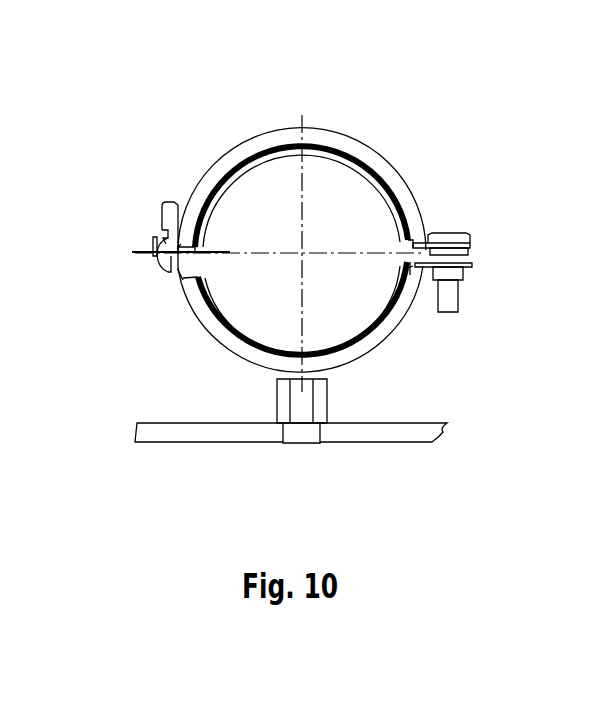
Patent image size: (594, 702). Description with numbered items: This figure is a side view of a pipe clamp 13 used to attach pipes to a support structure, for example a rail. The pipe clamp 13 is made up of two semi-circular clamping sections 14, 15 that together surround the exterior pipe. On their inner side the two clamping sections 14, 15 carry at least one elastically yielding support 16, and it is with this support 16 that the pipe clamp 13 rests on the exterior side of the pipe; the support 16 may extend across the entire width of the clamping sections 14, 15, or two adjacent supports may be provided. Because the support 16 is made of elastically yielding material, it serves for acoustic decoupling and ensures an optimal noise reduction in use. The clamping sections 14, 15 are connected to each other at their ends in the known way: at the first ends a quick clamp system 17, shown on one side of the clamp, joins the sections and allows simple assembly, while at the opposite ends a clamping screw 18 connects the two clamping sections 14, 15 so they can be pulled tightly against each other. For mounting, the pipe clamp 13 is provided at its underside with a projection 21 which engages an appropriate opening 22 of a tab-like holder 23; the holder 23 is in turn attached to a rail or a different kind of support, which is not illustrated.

The pipe clamp 13 is at (361, 110).
The clamping section 14 is at (383, 173).
The clamping section 15 is at (368, 348).
The elastically yielding support 16 is at (243, 168).
The quick clamp system 17 is at (163, 203).
The clamping screw 18 is at (457, 237).
The projection 21 is at (305, 405).
The opening 22 is at (303, 432).
The tab-like holder 23 is at (395, 433).